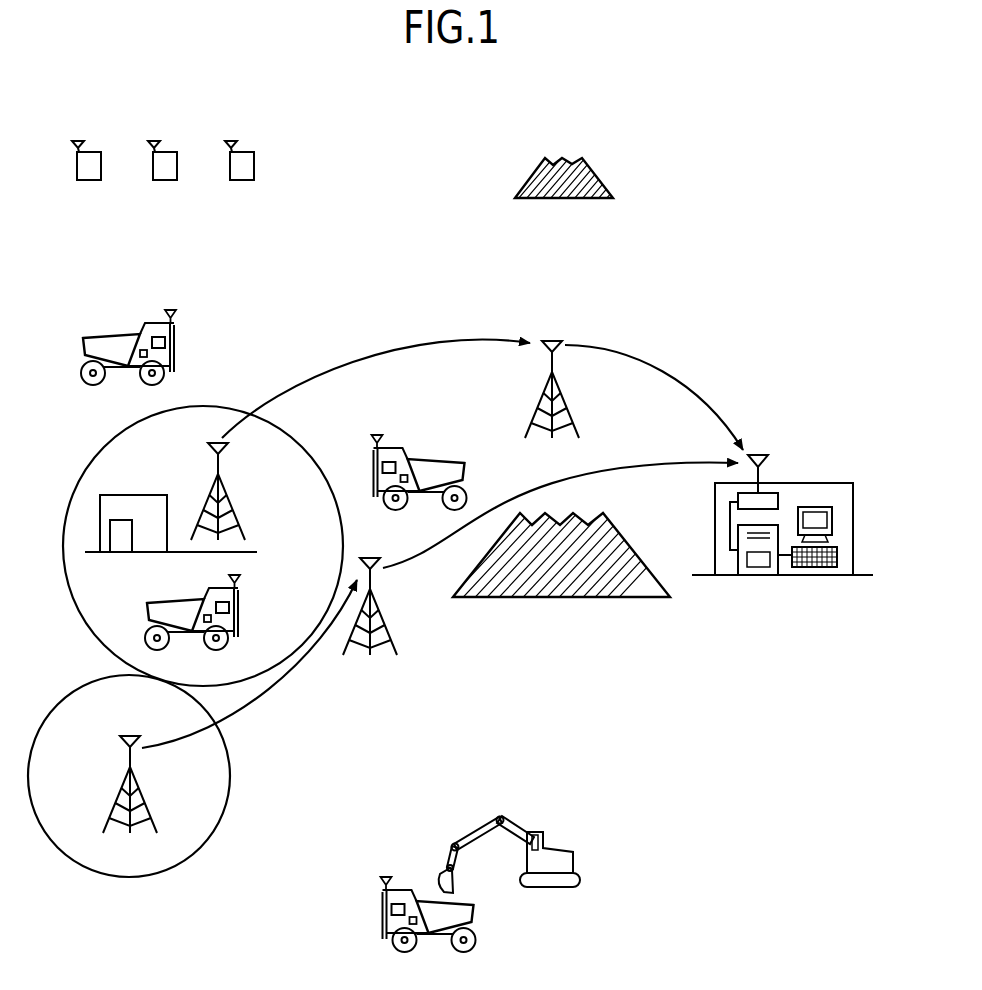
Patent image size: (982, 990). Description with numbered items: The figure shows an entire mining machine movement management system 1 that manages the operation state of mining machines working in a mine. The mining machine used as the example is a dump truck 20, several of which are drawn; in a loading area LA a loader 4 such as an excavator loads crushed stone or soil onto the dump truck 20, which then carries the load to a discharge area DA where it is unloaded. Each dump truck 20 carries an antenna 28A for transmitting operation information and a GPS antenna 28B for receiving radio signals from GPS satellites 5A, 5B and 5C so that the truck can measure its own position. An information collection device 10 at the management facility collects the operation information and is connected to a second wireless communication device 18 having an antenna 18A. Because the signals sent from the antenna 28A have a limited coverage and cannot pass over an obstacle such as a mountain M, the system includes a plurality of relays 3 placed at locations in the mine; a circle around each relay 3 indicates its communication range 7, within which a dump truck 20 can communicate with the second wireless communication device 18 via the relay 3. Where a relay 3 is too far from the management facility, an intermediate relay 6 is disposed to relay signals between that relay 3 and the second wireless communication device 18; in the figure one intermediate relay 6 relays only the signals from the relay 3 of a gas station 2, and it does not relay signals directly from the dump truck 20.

The mining machine movement management system 1 is at (768, 146).
The gas station 2 is at (112, 502).
The relay 3 is at (185, 481).
The loader 4 is at (563, 855).
The GPS satellite 5A is at (90, 181).
The GPS satellite 5B is at (166, 181).
The GPS satellite 5C is at (243, 181).
The intermediate relay 6 is at (546, 331).
The communication range 7 is at (99, 449).
The information collection device 10 is at (789, 505).
The second wireless communication device 18 is at (738, 498).
The antenna 18A is at (760, 453).
The dump truck 20 is at (105, 343).
The antenna 28A is at (173, 308).
The GPS antenna 28B is at (157, 352).
The discharge area DA is at (598, 163).
The loading area LA is at (412, 818).
The mountain M is at (623, 588).